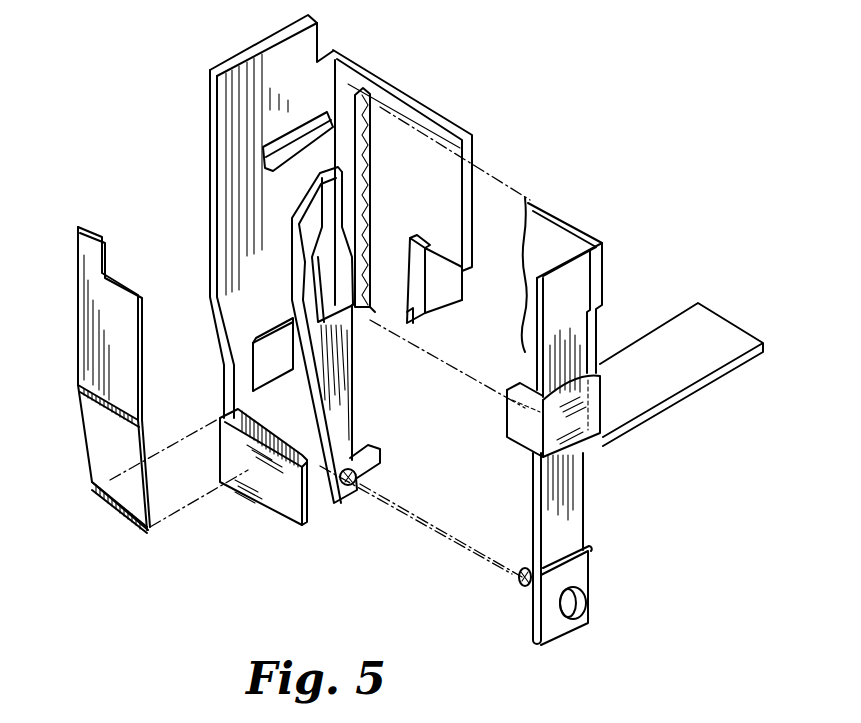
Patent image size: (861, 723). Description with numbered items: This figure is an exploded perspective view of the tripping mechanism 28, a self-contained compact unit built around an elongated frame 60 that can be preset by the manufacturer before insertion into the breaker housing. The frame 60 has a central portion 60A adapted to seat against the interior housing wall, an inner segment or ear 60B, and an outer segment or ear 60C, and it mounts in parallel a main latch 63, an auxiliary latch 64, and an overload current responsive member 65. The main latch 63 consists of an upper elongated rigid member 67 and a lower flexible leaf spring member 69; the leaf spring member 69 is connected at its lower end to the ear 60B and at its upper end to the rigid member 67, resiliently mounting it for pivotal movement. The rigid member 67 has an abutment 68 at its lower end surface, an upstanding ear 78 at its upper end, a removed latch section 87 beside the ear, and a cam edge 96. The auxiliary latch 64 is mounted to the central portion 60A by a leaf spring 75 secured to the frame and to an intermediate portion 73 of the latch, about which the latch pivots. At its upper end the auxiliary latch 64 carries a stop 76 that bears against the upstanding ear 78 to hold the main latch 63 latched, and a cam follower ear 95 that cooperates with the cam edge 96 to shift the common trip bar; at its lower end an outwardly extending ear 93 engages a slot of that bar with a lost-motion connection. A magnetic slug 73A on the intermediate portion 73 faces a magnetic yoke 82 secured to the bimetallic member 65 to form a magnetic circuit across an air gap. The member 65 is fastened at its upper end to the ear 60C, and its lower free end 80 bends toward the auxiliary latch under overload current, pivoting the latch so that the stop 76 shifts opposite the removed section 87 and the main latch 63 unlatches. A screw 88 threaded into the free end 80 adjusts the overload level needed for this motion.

The tripping mechanism 28 is at (604, 88).
The elongated frame 60 is at (347, 281).
The central portion of frame 60A is at (247, 216).
The inner segment or ear 60B is at (285, 512).
The outer segment or ear 60C is at (450, 165).
The main latch 63 is at (147, 372).
The auxiliary latch 64 is at (328, 335).
The overload current responsive member 65 is at (584, 430).
The upper elongated rigid member 67 is at (123, 311).
The abutment 68 is at (123, 410).
The lower flexible leaf spring member 69 is at (125, 493).
The intermediate portion of auxiliary latch 73 is at (307, 266).
The magnetic slug 73A is at (333, 231).
The leaf spring 75 is at (280, 332).
The stop 76 is at (280, 134).
The upstanding ear 78 is at (87, 235).
The free end 80 is at (557, 626).
The magnetic yoke 82 is at (605, 382).
The removed latch section 87 is at (121, 263).
The screw 88 is at (350, 487).
The outwardly extending ear 93 is at (380, 455).
The cam follower ear 95 is at (297, 226).
The cam edge 96 is at (137, 322).